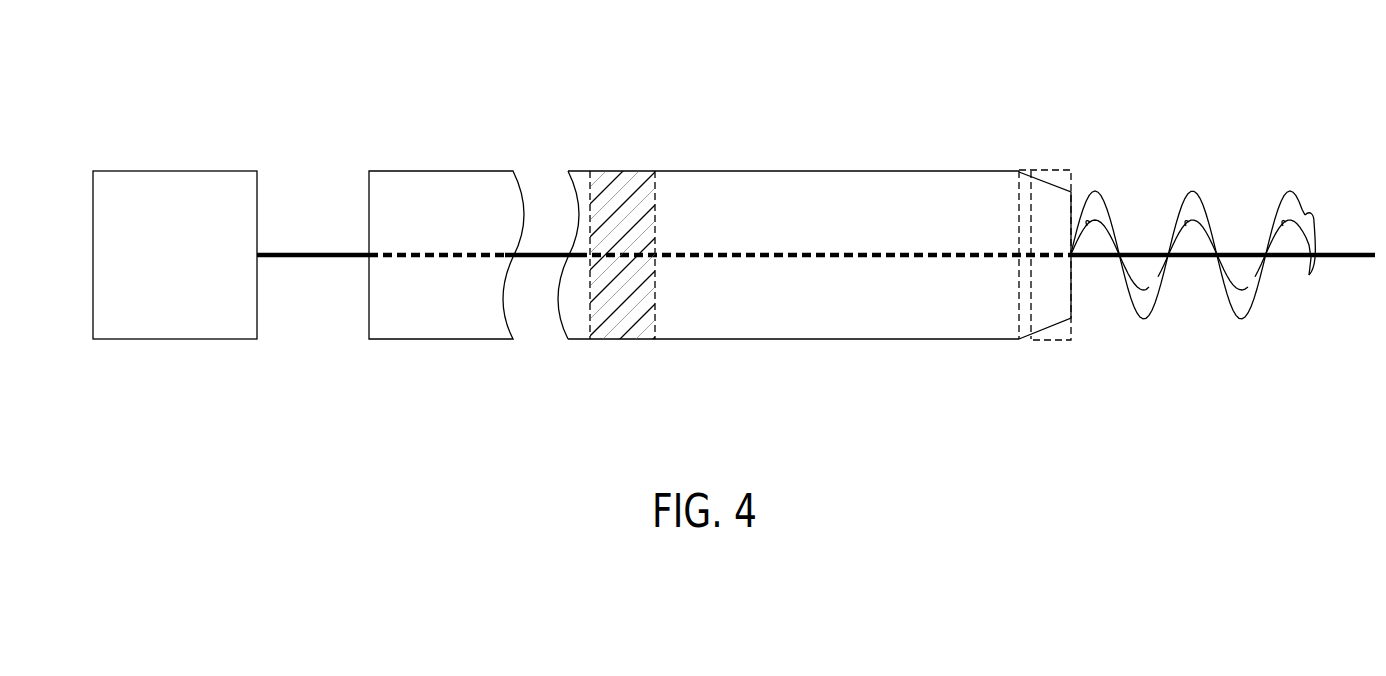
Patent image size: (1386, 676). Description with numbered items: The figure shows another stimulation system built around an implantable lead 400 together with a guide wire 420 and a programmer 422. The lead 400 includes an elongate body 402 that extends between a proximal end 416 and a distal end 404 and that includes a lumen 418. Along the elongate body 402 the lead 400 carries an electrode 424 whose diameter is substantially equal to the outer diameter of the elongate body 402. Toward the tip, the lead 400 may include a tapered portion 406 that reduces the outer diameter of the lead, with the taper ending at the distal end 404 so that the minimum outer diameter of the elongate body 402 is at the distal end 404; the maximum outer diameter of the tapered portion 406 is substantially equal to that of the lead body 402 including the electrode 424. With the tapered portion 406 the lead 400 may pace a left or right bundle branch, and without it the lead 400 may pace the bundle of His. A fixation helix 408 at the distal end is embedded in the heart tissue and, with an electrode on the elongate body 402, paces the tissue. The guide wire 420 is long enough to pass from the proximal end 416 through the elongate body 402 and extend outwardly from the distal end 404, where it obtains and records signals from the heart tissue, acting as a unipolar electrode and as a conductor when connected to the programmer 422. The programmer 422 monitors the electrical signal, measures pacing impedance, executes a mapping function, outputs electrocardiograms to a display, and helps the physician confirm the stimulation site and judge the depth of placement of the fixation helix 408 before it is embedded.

The implantable lead 400 is at (735, 223).
The elongate body 402 is at (932, 185).
The distal end 404 is at (1068, 310).
The tapered portion 406 is at (1073, 329).
The fixation helix 408 is at (1260, 278).
The proximal end 416 is at (427, 340).
The lumen 418 is at (1193, 237).
The guide wire 420 is at (1343, 260).
The programmer 422 is at (168, 336).
The electrode 424 is at (626, 331).